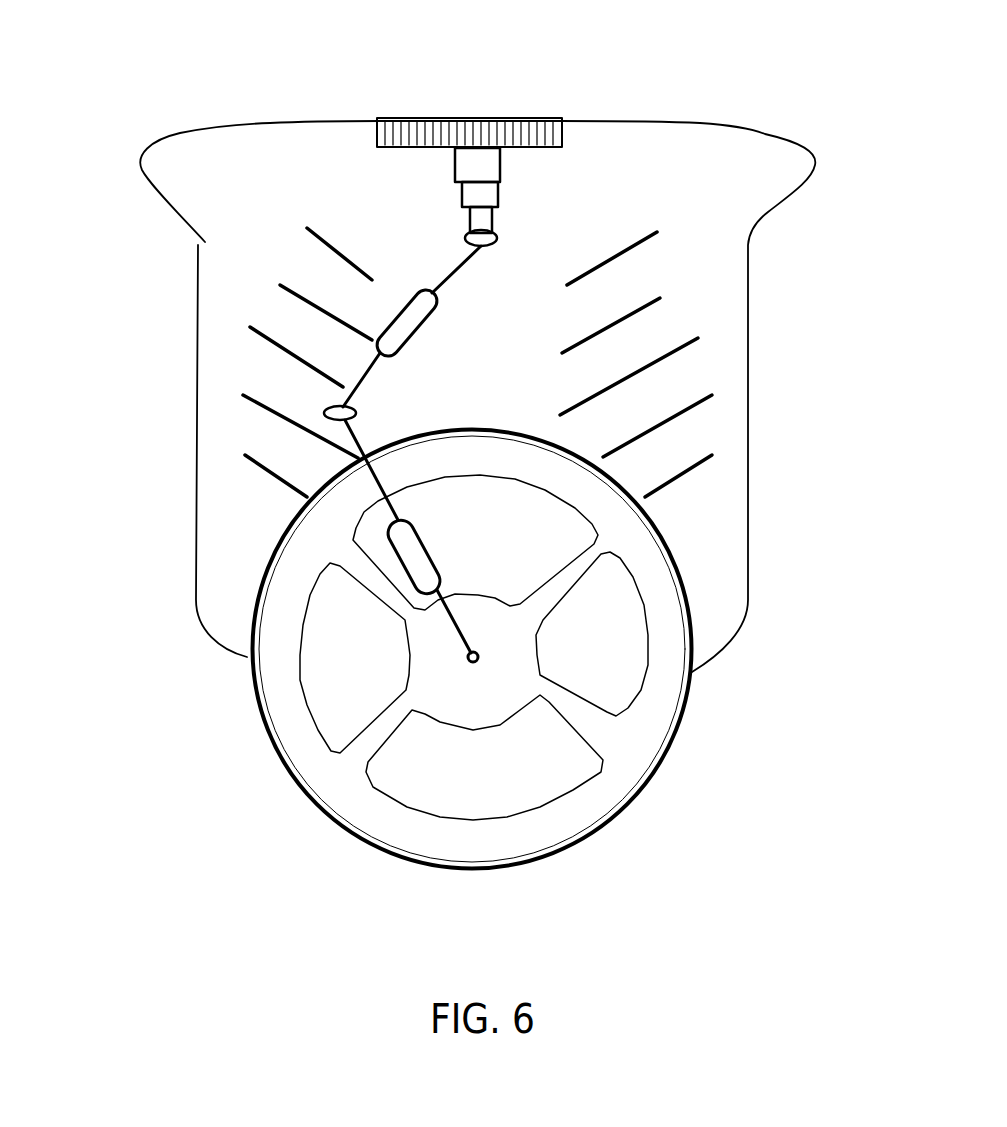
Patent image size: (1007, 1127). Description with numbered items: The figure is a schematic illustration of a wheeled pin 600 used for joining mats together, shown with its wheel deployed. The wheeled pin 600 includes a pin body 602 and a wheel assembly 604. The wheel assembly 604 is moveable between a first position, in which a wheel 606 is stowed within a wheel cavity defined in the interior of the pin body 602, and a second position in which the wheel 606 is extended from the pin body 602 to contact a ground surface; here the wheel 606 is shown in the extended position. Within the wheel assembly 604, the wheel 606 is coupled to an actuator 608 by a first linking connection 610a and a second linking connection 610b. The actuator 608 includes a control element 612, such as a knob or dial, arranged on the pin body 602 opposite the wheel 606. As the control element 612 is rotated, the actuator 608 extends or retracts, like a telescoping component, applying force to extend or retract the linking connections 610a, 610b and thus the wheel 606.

The wheeled pin 600 is at (158, 90).
The pin body 602 is at (215, 350).
The wheel assembly 604 is at (547, 90).
The wheel 606 is at (563, 830).
The actuator 608 is at (503, 199).
The first linking connection 610a is at (423, 297).
The second linking connection 610b is at (417, 528).
The control element 612 is at (467, 128).